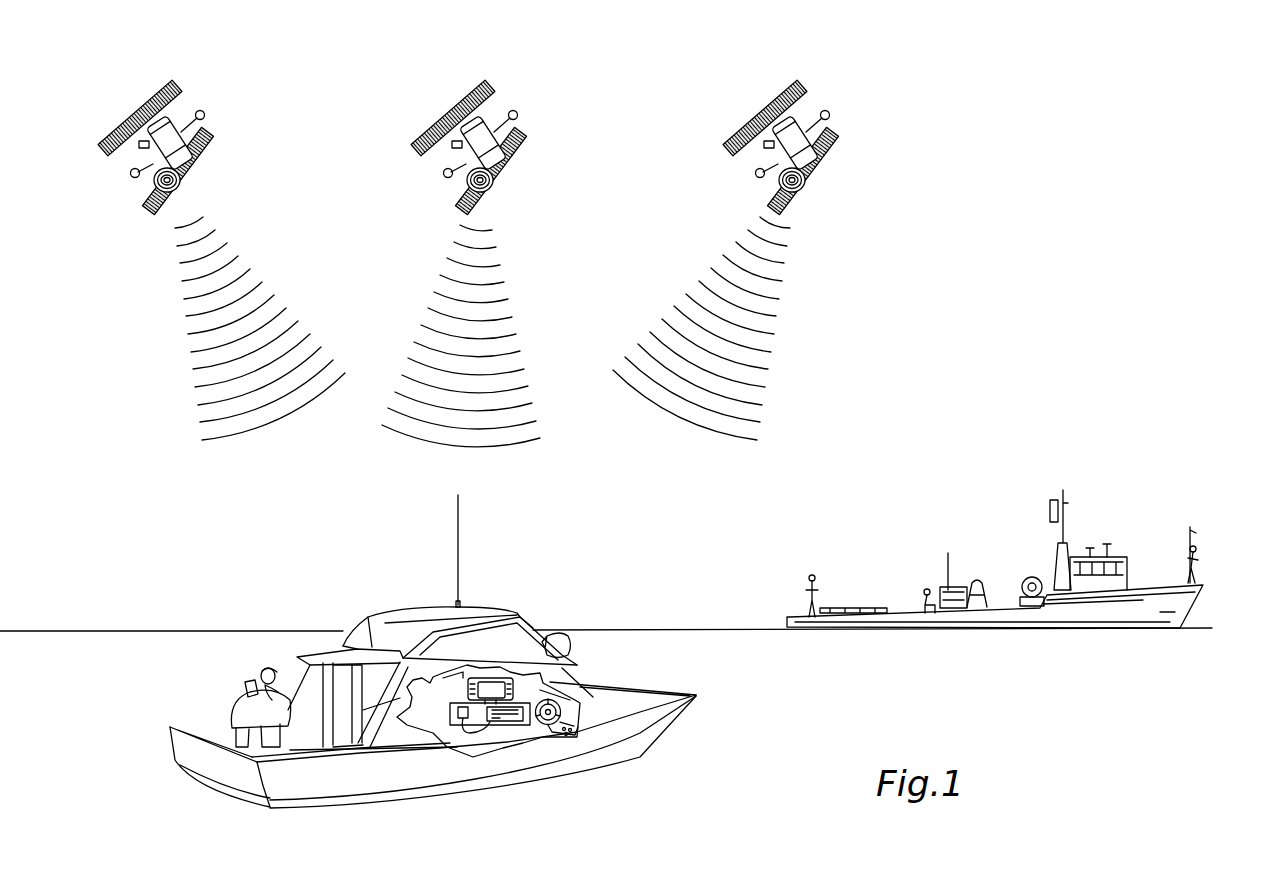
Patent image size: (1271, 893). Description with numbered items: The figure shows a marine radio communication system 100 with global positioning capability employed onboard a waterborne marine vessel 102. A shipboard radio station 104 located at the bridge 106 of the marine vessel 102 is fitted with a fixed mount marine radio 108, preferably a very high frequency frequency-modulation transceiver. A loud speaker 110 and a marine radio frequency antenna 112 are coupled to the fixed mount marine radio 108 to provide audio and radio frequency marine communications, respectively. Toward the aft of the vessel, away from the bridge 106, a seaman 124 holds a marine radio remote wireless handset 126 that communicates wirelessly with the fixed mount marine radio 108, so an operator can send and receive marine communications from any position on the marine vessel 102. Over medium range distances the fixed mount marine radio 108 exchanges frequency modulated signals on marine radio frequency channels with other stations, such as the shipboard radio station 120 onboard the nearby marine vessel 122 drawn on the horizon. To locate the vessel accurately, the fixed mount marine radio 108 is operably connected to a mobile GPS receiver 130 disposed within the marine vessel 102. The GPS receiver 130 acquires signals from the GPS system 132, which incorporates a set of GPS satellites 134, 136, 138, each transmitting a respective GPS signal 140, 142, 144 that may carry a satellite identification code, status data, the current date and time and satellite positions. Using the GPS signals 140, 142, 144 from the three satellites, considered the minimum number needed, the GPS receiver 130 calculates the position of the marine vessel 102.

The marine radio communication system 100 is at (636, 682).
The marine vessel 102 is at (646, 736).
The shipboard radio station 104 is at (560, 738).
The bridge 106 is at (535, 750).
The fixed mount marine radio 108 is at (503, 725).
The loud speaker 110 is at (560, 642).
The marine radio frequency antenna 112 is at (463, 541).
The shipboard radio station 120 is at (1110, 557).
The nearby marine vessel 122 is at (868, 608).
The seaman 124 is at (267, 667).
The marine radio remote wireless handset 126 is at (250, 682).
The mobile global positioning system (GPS) receiver 130 is at (520, 687).
The GPS system 132 is at (636, 182).
The GPS satellite 134 is at (212, 140).
The GPS satellite 136 is at (522, 140).
The GPS satellite 138 is at (834, 140).
The GPS signal 140 is at (252, 268).
The GPS signal 142 is at (437, 292).
The GPS signal 144 is at (698, 281).